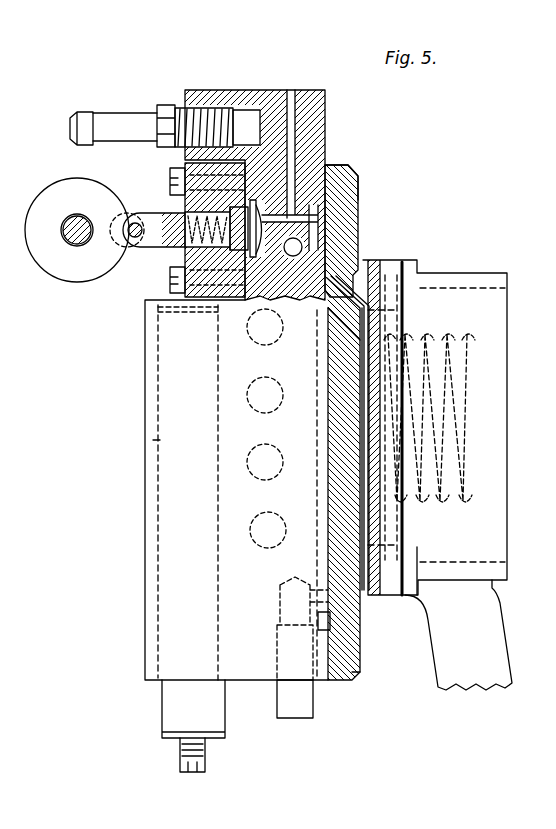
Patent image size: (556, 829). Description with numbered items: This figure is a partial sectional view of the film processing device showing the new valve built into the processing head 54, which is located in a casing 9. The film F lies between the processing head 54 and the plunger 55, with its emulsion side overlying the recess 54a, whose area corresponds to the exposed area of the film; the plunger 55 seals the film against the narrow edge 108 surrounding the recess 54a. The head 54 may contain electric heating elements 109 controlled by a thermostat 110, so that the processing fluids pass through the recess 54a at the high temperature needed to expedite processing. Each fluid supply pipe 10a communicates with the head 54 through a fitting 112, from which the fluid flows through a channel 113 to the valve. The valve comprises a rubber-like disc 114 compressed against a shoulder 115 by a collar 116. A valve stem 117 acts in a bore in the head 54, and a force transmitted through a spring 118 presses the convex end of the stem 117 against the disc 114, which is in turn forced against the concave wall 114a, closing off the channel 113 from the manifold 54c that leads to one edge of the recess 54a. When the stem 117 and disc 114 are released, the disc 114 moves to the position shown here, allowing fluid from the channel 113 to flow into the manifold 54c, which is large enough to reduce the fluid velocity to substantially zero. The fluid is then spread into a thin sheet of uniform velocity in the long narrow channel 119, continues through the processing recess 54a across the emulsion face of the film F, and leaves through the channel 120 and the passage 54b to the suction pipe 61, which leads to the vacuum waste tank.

The casing 9 is at (45, 208).
The fluid supply pipe 10a is at (125, 122).
The processing head 54 is at (152, 481).
The recess 54a is at (360, 383).
The passage 54b is at (358, 597).
The manifold 54c is at (320, 242).
The plunger 55 is at (390, 542).
The suction pipe 61 is at (298, 703).
The narrow edge 108 is at (380, 287).
The electric heating elements 109 is at (247, 396).
The thermostat 110 is at (153, 440).
The fitting 112 is at (197, 108).
The channel 113 is at (328, 135).
The rubber-like disc 114 is at (320, 208).
The concave wall 114a is at (322, 193).
The shoulder 115 is at (356, 174).
The collar 116 is at (188, 203).
The valve stem 117 is at (186, 246).
The spring 118 is at (183, 248).
The long narrow channel 119 is at (358, 249).
The channel 120 is at (365, 558).
The film F is at (362, 328).